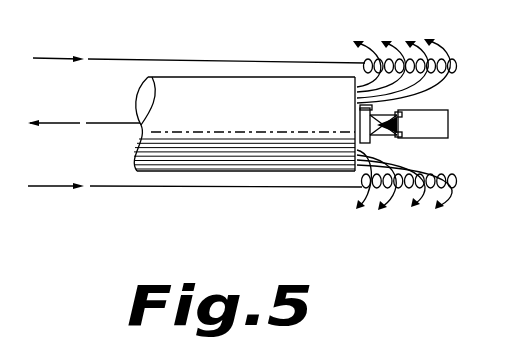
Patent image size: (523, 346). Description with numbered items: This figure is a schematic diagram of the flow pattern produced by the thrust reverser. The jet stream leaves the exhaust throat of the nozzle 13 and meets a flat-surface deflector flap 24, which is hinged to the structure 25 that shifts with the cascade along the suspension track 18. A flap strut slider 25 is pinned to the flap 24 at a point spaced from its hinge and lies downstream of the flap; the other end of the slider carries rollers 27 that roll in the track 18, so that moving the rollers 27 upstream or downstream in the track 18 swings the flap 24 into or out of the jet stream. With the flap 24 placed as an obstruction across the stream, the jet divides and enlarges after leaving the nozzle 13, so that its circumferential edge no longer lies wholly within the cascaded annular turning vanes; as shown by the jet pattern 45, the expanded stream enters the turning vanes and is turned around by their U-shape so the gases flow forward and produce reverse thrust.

The nozzle 13 is at (267, 112).
The suspension track 18 is at (430, 134).
The deflector flap 24 is at (360, 121).
The flap strut slider 25 is at (361, 109).
The rollers 27 is at (400, 114).
The jet pattern 45 is at (440, 47).